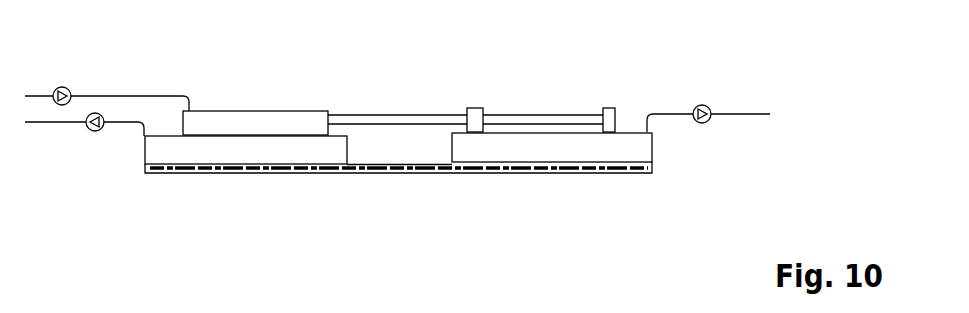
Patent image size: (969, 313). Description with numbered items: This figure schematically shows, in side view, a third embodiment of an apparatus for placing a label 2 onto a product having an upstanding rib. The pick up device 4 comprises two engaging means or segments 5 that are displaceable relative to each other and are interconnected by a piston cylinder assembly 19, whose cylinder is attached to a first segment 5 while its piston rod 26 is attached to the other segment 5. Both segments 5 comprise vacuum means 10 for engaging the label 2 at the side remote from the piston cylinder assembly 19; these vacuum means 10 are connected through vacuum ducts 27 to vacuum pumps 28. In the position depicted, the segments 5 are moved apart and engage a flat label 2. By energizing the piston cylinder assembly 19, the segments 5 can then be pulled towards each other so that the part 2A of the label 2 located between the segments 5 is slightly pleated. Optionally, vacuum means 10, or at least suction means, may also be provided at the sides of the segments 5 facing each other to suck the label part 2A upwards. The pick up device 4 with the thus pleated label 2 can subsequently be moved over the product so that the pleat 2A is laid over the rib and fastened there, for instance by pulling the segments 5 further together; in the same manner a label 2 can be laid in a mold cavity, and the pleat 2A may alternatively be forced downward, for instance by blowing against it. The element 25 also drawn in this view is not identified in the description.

The label 2 is at (614, 173).
The label part 2A is at (398, 158).
The pick up device 4 is at (647, 83).
The segment 5 is at (256, 159).
The vacuum means 10 is at (500, 195).
The piston cylinder assembly 19 is at (232, 100).
The cover block 25 is at (266, 118).
The piston rod 26 is at (547, 115).
The vacuum duct 27 is at (122, 122).
The vacuum pump 28 is at (88, 132).